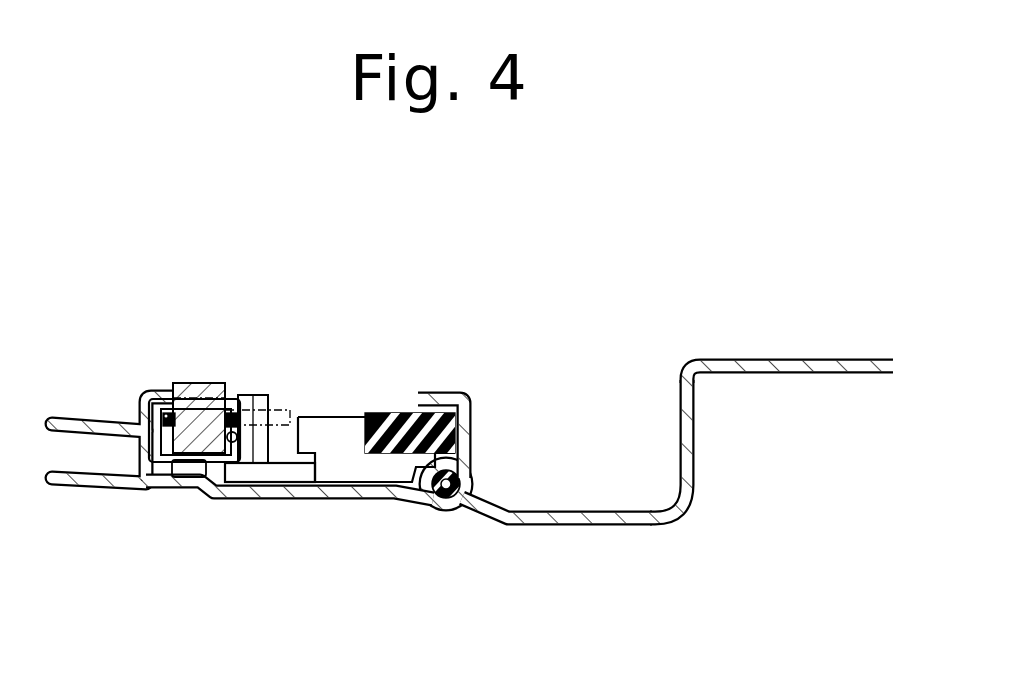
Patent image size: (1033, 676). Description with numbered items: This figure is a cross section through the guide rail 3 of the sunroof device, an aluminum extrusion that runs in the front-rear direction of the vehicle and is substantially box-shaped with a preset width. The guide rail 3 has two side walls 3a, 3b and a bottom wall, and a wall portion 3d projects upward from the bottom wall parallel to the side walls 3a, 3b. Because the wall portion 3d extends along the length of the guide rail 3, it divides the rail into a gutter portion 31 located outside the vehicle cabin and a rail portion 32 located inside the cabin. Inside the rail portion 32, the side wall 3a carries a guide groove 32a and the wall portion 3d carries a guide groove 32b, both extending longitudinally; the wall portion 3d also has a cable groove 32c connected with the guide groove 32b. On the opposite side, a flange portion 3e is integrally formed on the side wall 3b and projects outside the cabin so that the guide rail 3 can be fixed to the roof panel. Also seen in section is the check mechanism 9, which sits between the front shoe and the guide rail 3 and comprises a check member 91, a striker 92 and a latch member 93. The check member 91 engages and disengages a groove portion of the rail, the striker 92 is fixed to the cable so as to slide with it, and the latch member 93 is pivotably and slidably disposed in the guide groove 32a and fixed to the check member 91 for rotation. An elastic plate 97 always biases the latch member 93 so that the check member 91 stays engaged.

The guide rail 3 is at (460, 389).
The side wall 3a is at (137, 417).
The side wall 3b is at (692, 437).
The wall portion 3d is at (463, 430).
The flange portion 3e is at (808, 364).
The gutter portion 31 is at (585, 436).
The rail portion 32 is at (339, 422).
The guide groove 32a is at (185, 458).
The guide groove 32b is at (400, 405).
The cable groove 32c is at (455, 506).
The check mechanism 9 is at (219, 420).
The check member 91 is at (207, 382).
The striker 92 is at (255, 400).
The latch member 93 is at (160, 407).
The elastic plate 97 is at (238, 444).